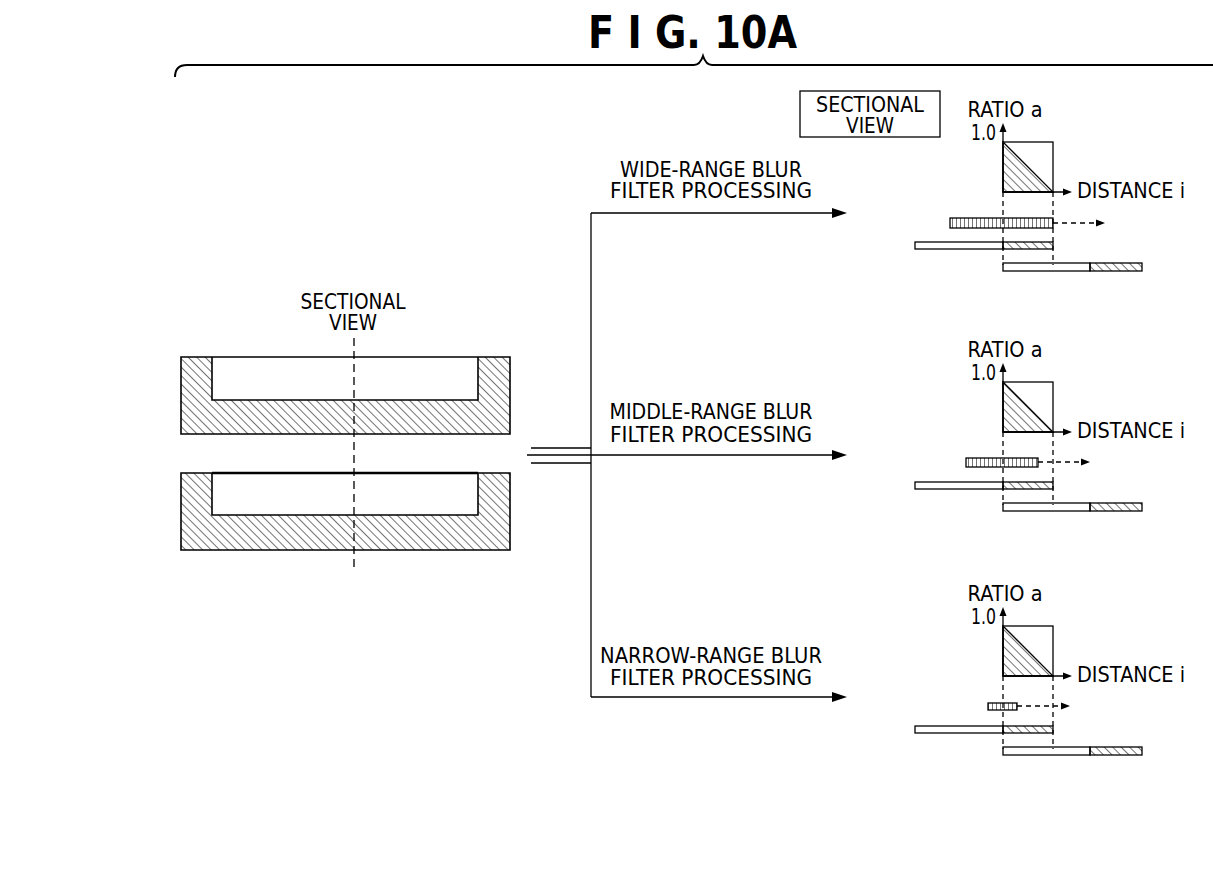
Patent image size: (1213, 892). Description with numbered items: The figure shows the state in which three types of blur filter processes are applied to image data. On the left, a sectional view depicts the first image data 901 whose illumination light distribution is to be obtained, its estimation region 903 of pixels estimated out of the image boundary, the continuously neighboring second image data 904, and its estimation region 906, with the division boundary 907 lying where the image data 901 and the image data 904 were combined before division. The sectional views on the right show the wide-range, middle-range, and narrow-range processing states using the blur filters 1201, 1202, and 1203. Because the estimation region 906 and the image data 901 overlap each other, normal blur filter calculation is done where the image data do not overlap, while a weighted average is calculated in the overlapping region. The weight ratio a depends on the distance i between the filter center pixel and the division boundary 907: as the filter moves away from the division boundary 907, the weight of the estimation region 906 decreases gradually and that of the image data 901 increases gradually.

The image data 901 is at (282, 498).
The estimation region 903 is at (480, 535).
The image data 904 is at (240, 357).
The estimation region 906 is at (495, 368).
The division boundary 907 is at (238, 402).
The blur filter 1201 is at (950, 222).
The blur filter 1202 is at (966, 461).
The blur filter 1203 is at (988, 706).